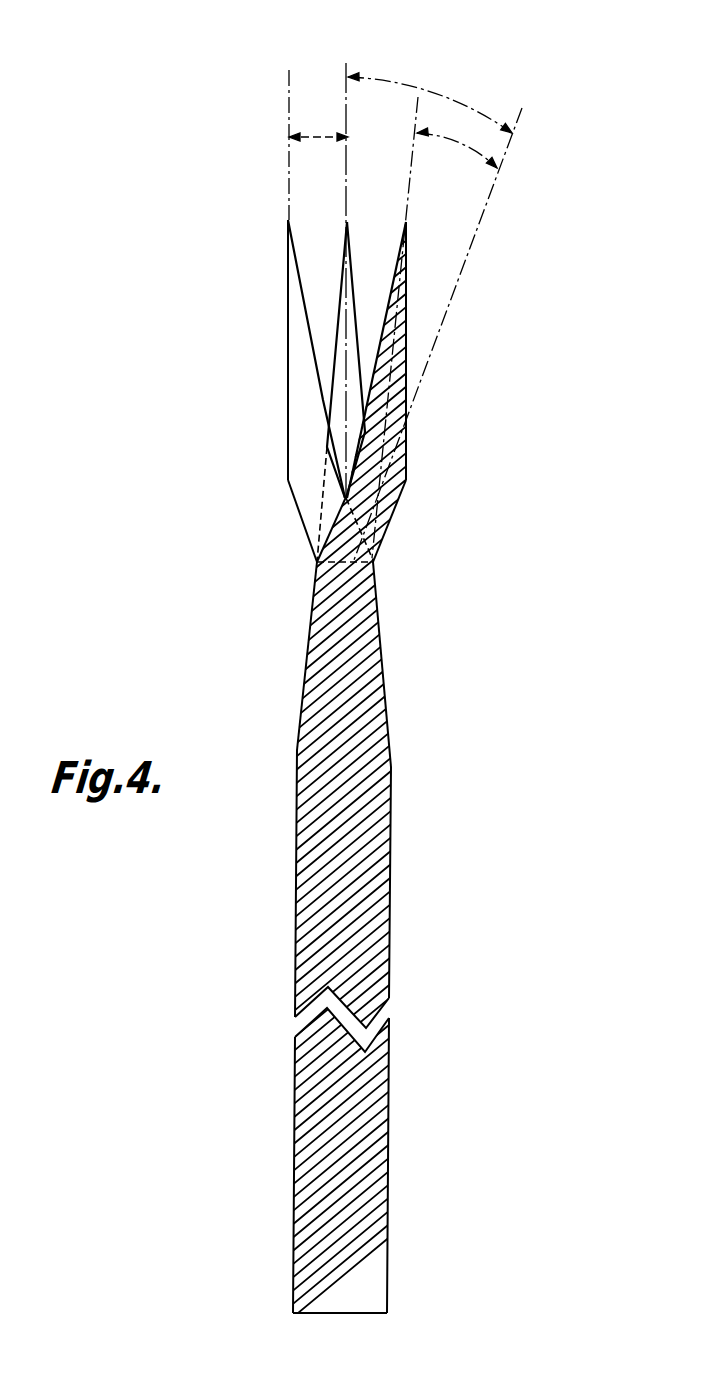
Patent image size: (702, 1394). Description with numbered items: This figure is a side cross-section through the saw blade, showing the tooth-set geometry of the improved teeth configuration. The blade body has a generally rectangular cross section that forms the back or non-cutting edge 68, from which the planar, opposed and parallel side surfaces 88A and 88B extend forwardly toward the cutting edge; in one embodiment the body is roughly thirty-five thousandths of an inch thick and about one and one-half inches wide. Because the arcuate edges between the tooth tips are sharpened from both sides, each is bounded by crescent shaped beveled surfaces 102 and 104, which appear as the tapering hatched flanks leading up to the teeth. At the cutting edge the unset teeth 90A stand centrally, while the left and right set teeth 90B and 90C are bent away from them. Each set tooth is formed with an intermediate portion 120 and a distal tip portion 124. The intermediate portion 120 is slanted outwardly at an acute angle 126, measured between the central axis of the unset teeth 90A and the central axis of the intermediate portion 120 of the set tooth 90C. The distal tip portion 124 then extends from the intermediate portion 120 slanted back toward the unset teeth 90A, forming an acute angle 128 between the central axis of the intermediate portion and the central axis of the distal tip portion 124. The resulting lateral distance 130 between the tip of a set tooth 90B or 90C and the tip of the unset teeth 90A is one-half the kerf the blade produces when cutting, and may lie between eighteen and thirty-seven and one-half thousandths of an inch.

The back edge 68 is at (345, 1313).
The side surface 88A is at (295, 1102).
The side surface 88B is at (390, 1101).
The unset teeth 90A is at (347, 253).
The left set tooth 90B is at (288, 268).
The right set tooth 90C is at (406, 281).
The crescent shaped beveled surface 102 is at (309, 650).
The crescent shaped beveled surface 104 is at (383, 657).
The intermediate portion 120 is at (300, 518).
The distal tip portion 124 is at (287, 415).
The acute angle 126 is at (433, 86).
The acute angle 128 is at (463, 144).
The lateral distance 130 is at (318, 137).